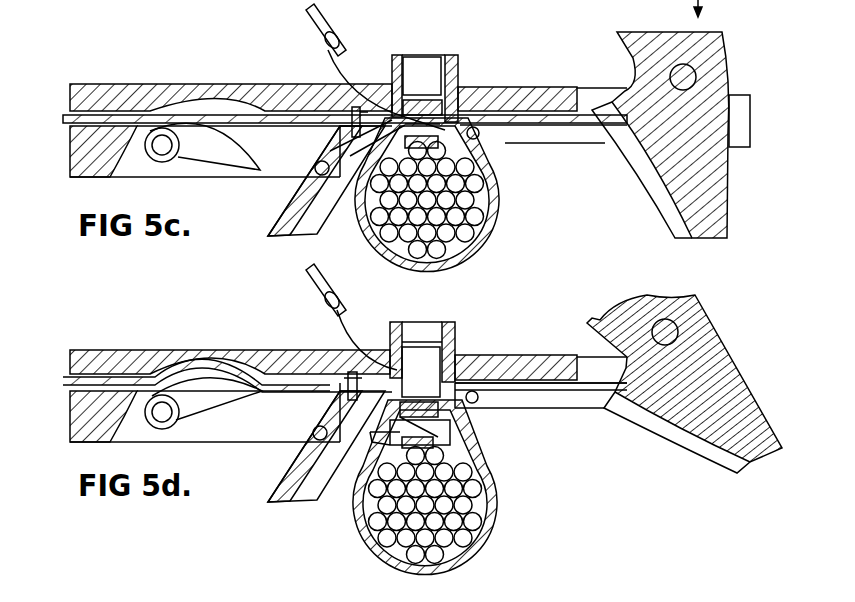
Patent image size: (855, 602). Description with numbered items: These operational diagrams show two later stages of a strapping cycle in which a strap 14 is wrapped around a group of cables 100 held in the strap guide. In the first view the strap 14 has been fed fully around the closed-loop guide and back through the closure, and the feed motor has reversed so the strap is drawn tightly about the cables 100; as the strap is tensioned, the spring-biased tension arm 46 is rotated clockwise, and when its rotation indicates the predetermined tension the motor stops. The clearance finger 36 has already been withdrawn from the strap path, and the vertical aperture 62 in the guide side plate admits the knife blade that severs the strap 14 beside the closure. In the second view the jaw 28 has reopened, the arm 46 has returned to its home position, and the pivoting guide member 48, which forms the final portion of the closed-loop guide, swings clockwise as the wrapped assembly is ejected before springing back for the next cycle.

In FIG. 5C, the strap 14 is at (63, 116).
In FIG. 5D, the strap 14 is at (63, 380).
In FIG. 5D, the jaw 28 is at (670, 420).
In FIG. 5D, the clearance finger 36 is at (346, 346).
In FIG. 5C, the tension arm 46 is at (240, 157).
In FIG. 5D, the tension arm 46 is at (220, 398).
In FIG. 5D, the guide member 48 is at (370, 442).
In FIG. 5C, the vertical aperture 62 is at (352, 110).
In FIG. 5D, the vertical aperture 62 is at (348, 376).
In FIG. 5C, the cables 100 is at (478, 208).